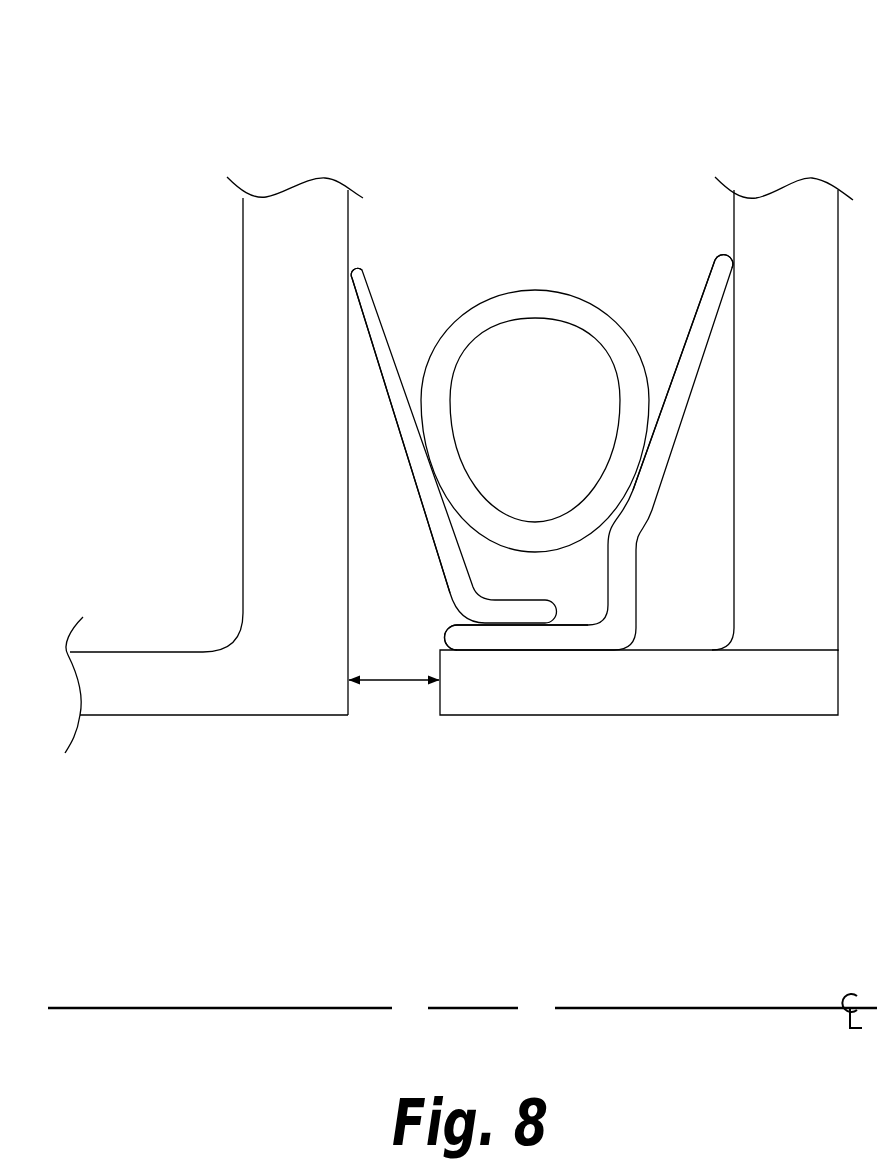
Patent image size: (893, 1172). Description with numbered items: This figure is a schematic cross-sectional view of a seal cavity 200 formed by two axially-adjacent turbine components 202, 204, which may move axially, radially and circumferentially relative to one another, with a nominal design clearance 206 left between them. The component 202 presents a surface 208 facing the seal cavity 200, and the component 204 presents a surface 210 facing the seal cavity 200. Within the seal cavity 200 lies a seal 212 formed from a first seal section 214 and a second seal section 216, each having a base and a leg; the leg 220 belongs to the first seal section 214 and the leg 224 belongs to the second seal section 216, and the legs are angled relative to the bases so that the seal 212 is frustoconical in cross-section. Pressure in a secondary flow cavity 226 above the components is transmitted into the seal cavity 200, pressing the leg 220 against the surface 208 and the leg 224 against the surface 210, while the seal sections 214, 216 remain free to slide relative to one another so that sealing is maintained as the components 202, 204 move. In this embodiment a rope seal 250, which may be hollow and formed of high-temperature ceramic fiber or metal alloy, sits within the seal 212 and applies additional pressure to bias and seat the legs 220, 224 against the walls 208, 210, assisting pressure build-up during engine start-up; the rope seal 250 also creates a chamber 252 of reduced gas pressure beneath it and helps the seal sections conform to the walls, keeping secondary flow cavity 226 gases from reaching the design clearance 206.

The seal cavity 200 is at (605, 140).
The turbine component 202 is at (205, 715).
The turbine component 204 is at (653, 717).
The nominal design clearance 206 is at (393, 682).
The surface 208 is at (348, 220).
The surface 210 is at (734, 217).
The seal 212 is at (395, 329).
The first seal section 214 is at (420, 512).
The second seal section 216 is at (658, 490).
The leg 220 is at (352, 272).
The leg 224 is at (722, 258).
The secondary flow cavity 226 is at (498, 113).
The rope seal 250 is at (537, 290).
The chamber 252 is at (531, 580).